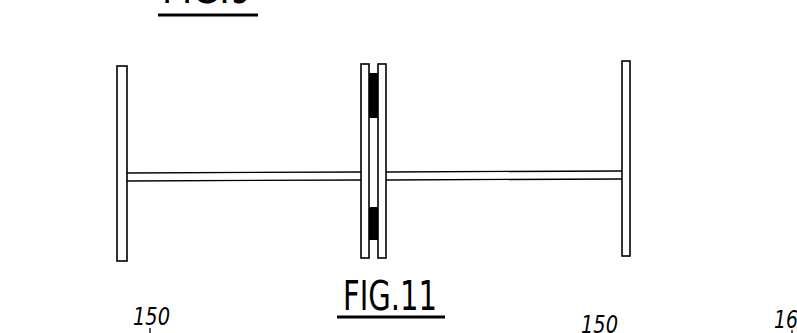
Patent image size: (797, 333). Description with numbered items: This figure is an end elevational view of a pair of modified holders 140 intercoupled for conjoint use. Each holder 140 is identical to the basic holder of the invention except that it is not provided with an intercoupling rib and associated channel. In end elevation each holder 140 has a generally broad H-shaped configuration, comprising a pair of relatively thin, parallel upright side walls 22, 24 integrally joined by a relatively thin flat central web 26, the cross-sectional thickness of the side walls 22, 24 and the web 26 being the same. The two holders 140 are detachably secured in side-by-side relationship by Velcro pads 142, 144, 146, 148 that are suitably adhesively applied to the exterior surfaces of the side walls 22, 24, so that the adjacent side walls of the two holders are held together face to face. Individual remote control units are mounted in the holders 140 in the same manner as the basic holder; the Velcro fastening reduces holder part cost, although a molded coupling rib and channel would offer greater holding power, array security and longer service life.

The side wall 22 is at (108, 131).
The side wall 24 is at (350, 96).
The central web 26 is at (168, 163).
The modified holder 140 is at (108, 58).
The Velcro pad 142 is at (371, 72).
The Velcro pad 144 is at (375, 72).
The Velcro pad 146 is at (372, 238).
The Velcro pad 148 is at (380, 238).